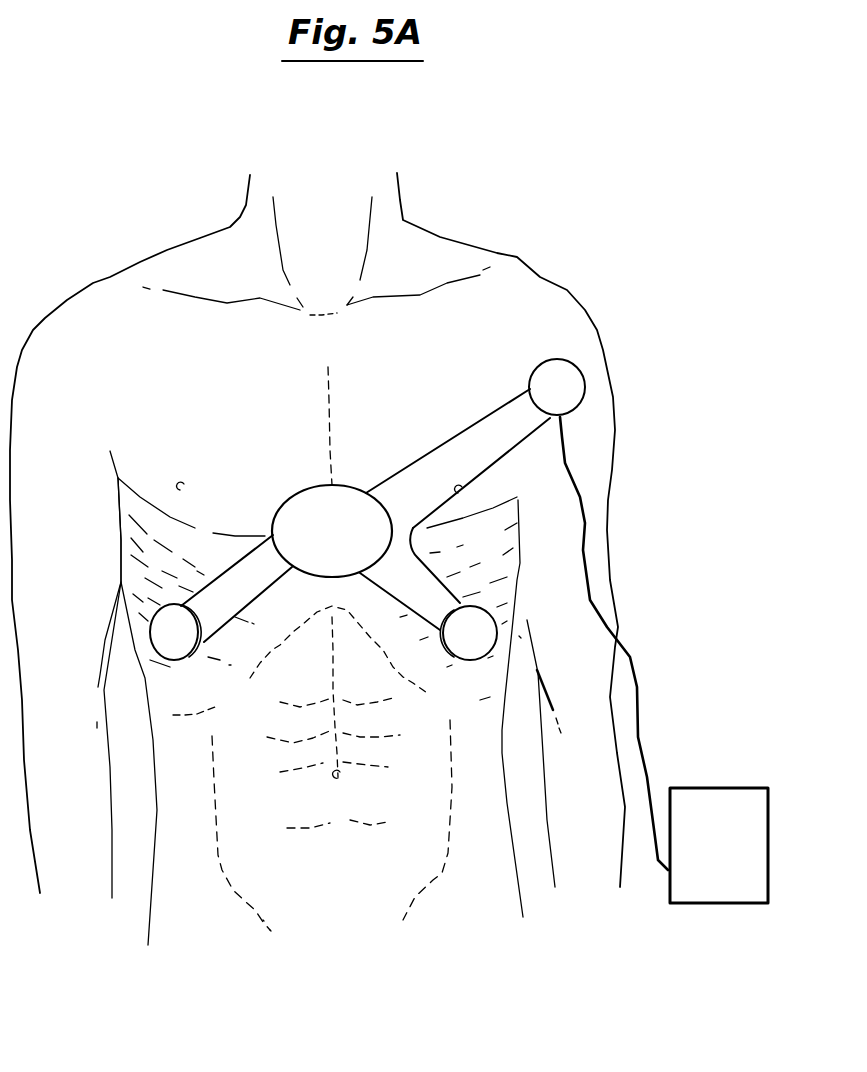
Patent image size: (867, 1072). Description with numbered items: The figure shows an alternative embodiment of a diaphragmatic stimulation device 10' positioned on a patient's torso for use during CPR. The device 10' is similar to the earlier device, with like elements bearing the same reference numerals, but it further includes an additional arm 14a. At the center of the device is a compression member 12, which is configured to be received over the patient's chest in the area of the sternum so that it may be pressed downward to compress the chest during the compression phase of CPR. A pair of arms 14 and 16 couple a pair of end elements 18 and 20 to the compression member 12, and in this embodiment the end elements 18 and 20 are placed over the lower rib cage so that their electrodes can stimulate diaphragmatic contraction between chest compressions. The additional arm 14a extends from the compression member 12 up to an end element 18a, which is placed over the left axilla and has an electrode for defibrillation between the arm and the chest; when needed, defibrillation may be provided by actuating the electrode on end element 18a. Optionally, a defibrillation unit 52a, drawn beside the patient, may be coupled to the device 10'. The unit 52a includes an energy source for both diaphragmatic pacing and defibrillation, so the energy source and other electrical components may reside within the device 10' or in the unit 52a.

The device 10' is at (418, 518).
The compression member 12 is at (313, 520).
The arm 14 is at (235, 585).
The arm 14a is at (507, 430).
The arm 16 is at (423, 593).
The end element 18 is at (177, 643).
The end element 18a is at (567, 385).
The end element 20 is at (473, 633).
The defibrillation unit 52a is at (717, 813).